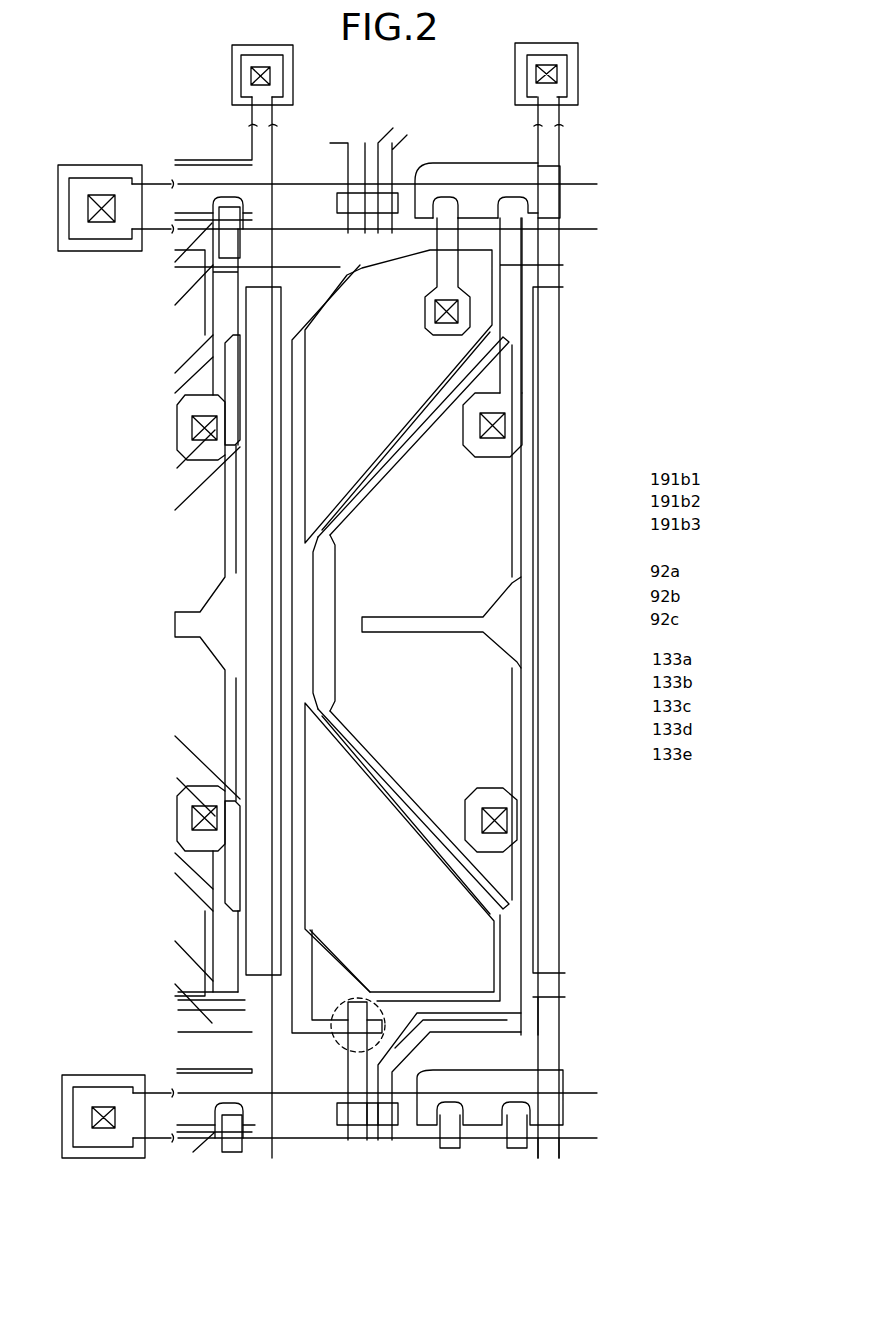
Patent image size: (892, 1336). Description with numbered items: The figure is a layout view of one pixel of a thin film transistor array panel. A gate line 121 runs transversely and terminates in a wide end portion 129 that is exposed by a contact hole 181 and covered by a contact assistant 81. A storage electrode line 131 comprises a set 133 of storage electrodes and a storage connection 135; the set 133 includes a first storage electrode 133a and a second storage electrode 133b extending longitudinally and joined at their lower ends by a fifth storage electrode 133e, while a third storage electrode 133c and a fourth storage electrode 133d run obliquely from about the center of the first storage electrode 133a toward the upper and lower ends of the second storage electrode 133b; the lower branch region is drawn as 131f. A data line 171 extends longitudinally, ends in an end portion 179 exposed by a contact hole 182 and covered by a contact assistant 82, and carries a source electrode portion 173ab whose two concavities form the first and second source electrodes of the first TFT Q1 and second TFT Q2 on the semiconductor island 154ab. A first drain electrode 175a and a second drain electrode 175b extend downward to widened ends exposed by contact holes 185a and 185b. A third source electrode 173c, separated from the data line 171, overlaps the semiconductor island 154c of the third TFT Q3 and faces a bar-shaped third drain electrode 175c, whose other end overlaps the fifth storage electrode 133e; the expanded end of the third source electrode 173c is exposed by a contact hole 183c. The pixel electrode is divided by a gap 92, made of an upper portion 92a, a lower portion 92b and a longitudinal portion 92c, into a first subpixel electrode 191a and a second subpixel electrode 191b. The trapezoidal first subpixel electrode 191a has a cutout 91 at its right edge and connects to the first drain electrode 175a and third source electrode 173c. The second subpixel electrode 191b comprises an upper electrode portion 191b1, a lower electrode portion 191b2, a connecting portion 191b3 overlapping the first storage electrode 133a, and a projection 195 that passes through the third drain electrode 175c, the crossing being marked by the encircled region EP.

The contact assistant 82 is at (578, 45).
The end portion of data line 179 is at (567, 74).
The contact hole 182 is at (536, 74).
The data line 171 is at (559, 703).
The storage connection 135 is at (262, 267).
The first storage electrode 133a is at (281, 882).
The gate line 121 is at (603, 183).
The contact assistant 81 is at (80, 1075).
The end portion of gate line 129 is at (85, 1160).
The contact hole 181 is at (105, 1130).
The source electrode portion 173ab is at (465, 163).
The first TFT Q1 is at (445, 197).
The second TFT Q2 is at (512, 197).
The semiconductor island 154ab is at (561, 166).
The second drain electrode 175b is at (437, 258).
The contact hole 185b is at (435, 318).
The first drain electrode 175a is at (525, 275).
The contact hole 185a is at (505, 425).
The second subpixel electrode 191b is at (527, 641).
The upper electrode portion 191b1 is at (497, 302).
The lower electrode portion 191b2 is at (497, 945).
The connecting portion 191b3 is at (305, 590).
The first subpixel electrode 191a is at (525, 548).
The cutout 91 is at (435, 620).
The gap 92 is at (520, 623).
The upper portion of gap 92a is at (400, 462).
The lower portion of gap 92b is at (377, 760).
The longitudinal portion of gap 92c is at (340, 683).
The set of storage electrodes 133 is at (533, 740).
The second storage electrode 133b is at (540, 648).
The third storage electrode 133c is at (372, 487).
The fourth storage electrode 133d is at (422, 818).
The fifth storage electrode 133e is at (457, 1112).
The storage electrode line 131 is at (460, 746).
The storage electrode line branch 131f is at (200, 1025).
The projection 195 is at (338, 1035).
The semiconductor island 154c is at (340, 1125).
The third drain electrode 175c is at (355, 1142).
The third TFT Q3 is at (373, 1142).
The third source electrode 173c is at (388, 1142).
The expanded portion EP is at (385, 1040).
The contact hole 183c is at (508, 825).